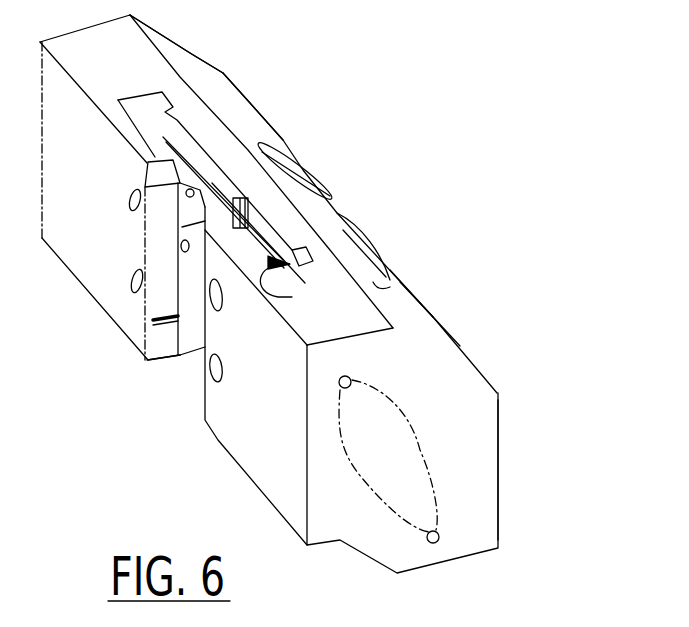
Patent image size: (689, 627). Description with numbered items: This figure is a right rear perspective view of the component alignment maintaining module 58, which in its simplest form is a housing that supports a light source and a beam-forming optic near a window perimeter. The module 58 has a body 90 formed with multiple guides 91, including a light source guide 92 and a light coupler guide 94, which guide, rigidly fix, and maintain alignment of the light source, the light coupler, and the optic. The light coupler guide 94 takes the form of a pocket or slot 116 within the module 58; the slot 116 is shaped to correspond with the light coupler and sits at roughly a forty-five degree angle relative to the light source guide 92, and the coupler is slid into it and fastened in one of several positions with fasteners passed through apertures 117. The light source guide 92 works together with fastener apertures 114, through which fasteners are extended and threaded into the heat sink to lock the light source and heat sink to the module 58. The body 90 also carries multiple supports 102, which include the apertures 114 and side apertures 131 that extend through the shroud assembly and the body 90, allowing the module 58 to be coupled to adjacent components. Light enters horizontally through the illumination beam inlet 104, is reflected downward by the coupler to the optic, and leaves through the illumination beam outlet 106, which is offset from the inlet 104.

The module 58 is at (433, 316).
The body 90 is at (488, 433).
The guides 91 is at (198, 102).
The light source guide 92 is at (162, 297).
The light coupler guide 94 is at (138, 93).
The supports 102 is at (293, 170).
The illumination beam inlet 104 is at (165, 373).
The illumination beam outlet 106 is at (512, 466).
The fastener apertures 114 is at (333, 200).
The slot 116 is at (280, 296).
The apertures 117 is at (242, 116).
The side apertures 131 is at (356, 447).